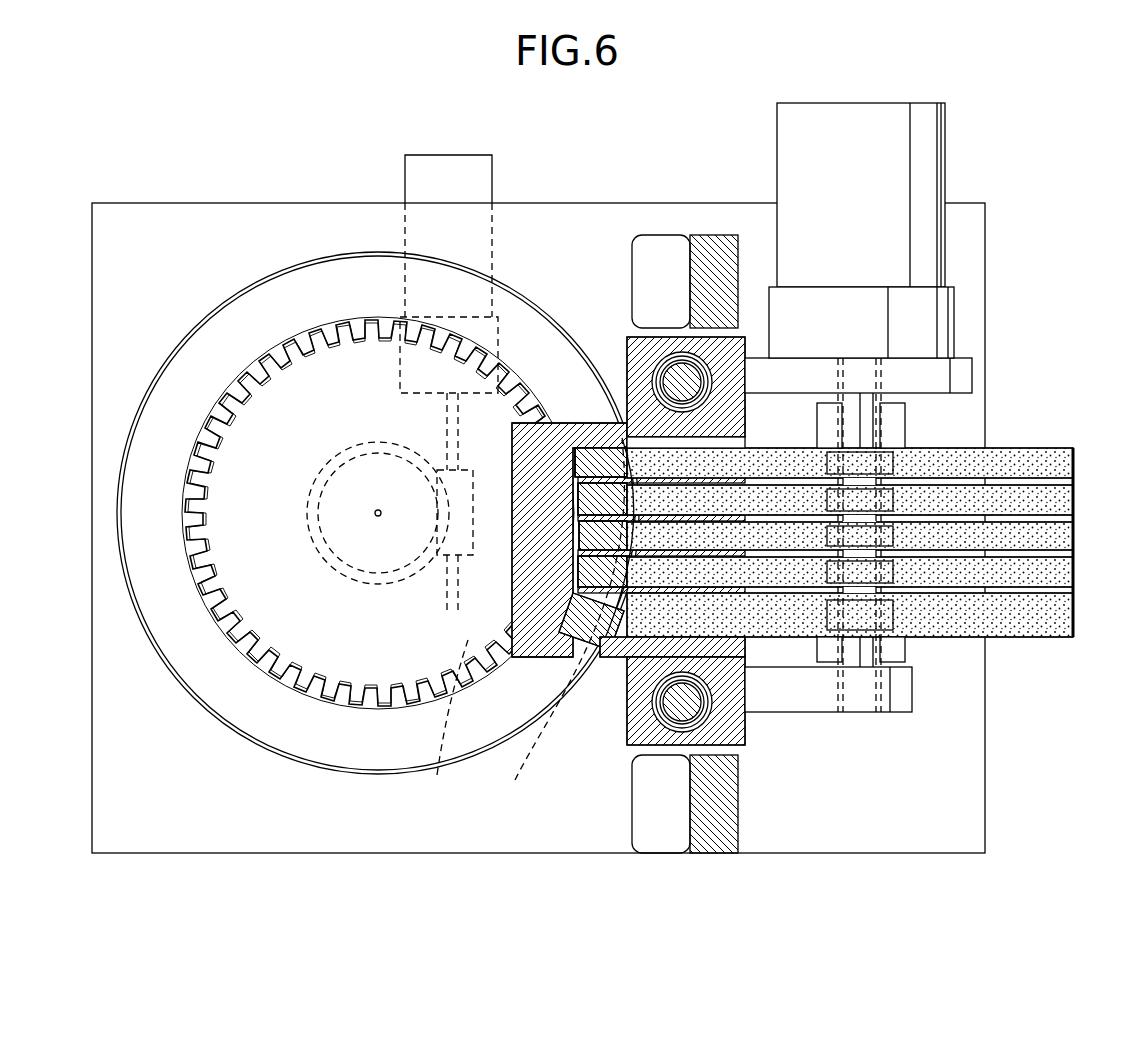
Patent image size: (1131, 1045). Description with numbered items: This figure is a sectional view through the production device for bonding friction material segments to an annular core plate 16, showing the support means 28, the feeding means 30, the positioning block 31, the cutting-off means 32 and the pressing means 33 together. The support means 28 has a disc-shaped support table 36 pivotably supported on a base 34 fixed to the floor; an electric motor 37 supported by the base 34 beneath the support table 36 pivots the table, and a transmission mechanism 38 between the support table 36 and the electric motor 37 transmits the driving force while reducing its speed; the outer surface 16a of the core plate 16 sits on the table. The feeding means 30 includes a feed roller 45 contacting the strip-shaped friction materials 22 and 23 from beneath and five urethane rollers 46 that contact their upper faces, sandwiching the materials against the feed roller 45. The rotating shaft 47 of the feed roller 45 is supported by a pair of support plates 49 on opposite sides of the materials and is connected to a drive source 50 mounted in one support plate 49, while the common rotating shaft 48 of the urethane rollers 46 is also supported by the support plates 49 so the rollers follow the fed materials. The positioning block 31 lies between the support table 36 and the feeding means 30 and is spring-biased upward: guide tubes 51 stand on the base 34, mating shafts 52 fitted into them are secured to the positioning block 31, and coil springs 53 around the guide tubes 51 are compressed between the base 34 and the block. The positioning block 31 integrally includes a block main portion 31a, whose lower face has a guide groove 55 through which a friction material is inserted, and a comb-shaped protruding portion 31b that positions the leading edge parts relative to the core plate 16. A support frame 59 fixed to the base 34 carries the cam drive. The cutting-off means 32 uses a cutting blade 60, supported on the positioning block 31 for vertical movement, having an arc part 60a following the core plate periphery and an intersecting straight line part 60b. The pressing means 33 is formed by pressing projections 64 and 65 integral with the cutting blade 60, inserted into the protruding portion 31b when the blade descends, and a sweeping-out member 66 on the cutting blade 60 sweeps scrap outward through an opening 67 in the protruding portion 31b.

The annular core plate 16 is at (360, 304).
The outer ring surface 16a is at (200, 348).
The strip-shaped friction material 22 is at (1018, 617).
The strip-shaped friction material 23 is at (1025, 500).
The support means 28 is at (382, 250).
The feeding means 30 is at (922, 652).
The positioning block 31 is at (752, 730).
The block main portion 31a is at (730, 347).
The protruding portion 31b is at (512, 565).
The cutting-off means 32 is at (750, 455).
The pressing means 33 is at (590, 442).
The base 34 is at (220, 217).
The support table 36 is at (290, 268).
The electric motor 37 is at (458, 170).
The transmission mechanism 38 is at (440, 437).
The feed roller 45 is at (893, 420).
The urethane rollers 46 is at (840, 570).
The rotating shaft 47 is at (880, 375).
The common rotating shaft 48 is at (860, 410).
The support plates 49 is at (960, 372).
The drive source 50 is at (870, 188).
The guide tubes 51 is at (658, 378).
The mating shafts 52 is at (748, 358).
The coil springs 53 is at (680, 370).
The guide groove 55 is at (578, 502).
The support frame 59 is at (722, 830).
The cutting blade 60 is at (535, 802).
The arc part 60a is at (438, 723).
The straight line part 60b is at (553, 623).
The pressing projection 64 is at (525, 600).
The pressing projection 65 is at (578, 508).
The sweeping-out member 66 is at (608, 622).
The opening 67 is at (563, 647).